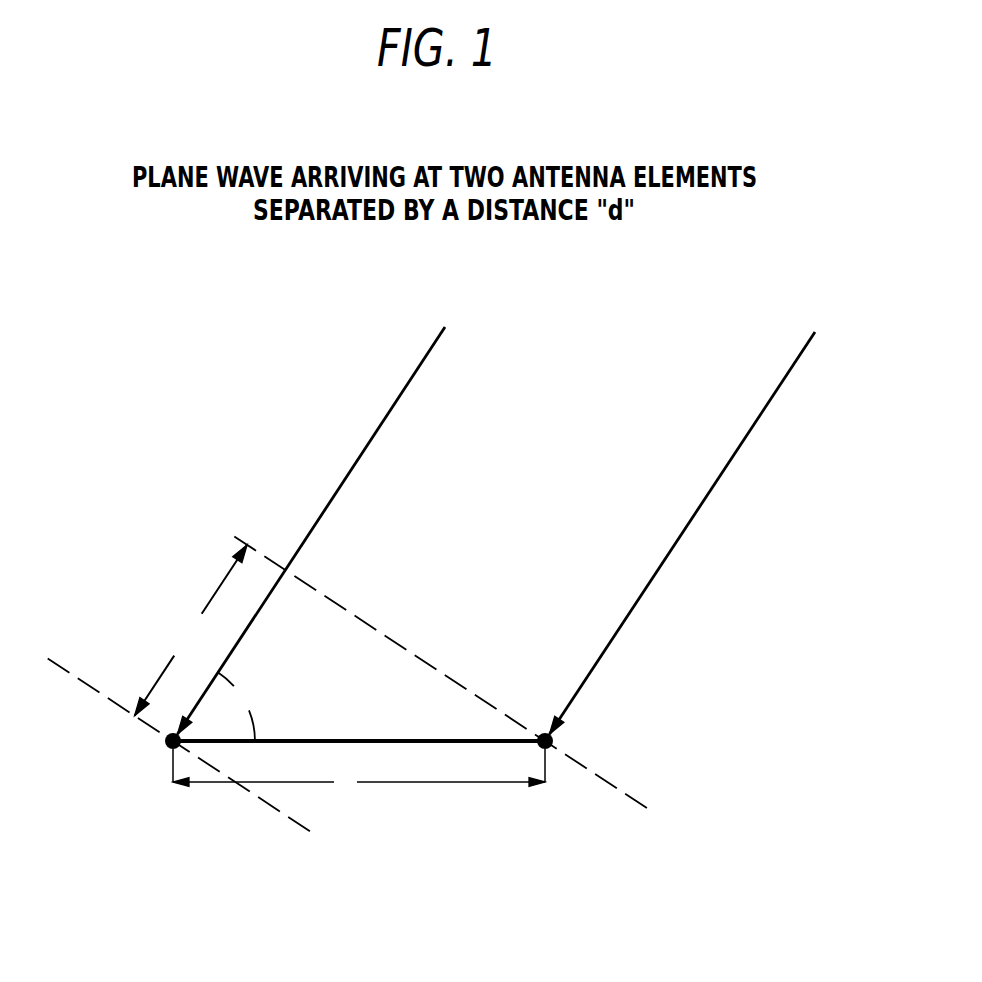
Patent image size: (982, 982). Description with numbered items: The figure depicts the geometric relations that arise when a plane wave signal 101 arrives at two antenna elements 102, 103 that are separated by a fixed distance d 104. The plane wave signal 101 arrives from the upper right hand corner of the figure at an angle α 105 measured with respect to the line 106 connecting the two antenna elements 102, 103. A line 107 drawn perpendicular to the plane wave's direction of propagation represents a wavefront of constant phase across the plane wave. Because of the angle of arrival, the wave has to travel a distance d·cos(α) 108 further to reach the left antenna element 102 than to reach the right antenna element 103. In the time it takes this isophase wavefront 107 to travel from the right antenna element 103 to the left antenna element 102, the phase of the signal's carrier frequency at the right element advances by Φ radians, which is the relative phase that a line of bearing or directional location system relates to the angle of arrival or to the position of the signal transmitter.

The plane wave signal 101 is at (367, 445).
The antenna element 102 is at (168, 744).
The antenna element 103 is at (551, 746).
The distance d 104 is at (348, 802).
The angle α 105 is at (258, 698).
The line connecting the two antenna elements 106 is at (450, 737).
The wavefront of constant phase 107 is at (590, 770).
The distance d·cos(α) 108 is at (172, 622).